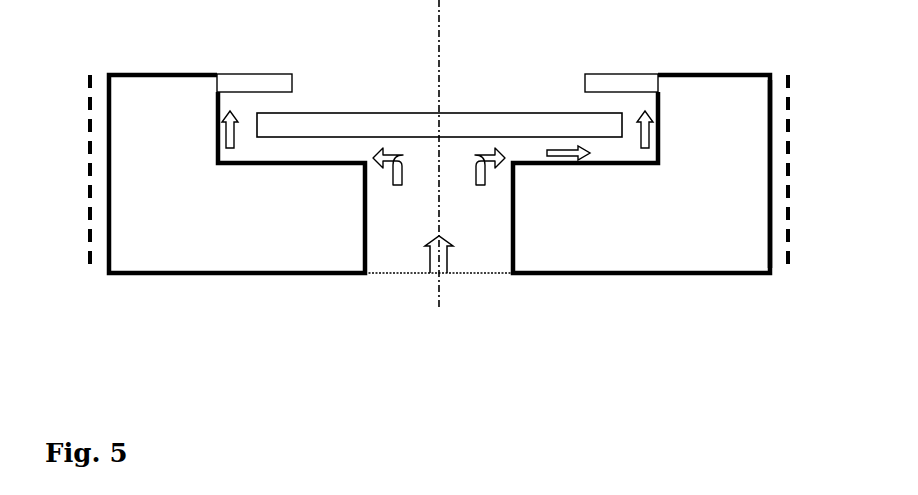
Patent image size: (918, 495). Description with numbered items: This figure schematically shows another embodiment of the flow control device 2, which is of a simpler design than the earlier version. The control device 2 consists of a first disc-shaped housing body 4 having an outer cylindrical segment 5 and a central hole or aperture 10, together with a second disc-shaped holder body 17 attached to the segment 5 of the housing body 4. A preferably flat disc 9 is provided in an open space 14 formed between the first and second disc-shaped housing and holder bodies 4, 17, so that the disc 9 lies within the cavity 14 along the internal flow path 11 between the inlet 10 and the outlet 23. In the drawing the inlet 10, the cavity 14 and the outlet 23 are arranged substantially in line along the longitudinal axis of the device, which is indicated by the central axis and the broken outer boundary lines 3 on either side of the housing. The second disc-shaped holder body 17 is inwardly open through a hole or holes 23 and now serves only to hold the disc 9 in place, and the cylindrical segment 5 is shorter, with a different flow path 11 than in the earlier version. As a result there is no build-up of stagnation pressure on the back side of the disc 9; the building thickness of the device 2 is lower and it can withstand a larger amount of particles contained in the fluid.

The control device 2 is at (200, 289).
The outer boundary 3 is at (788, 85).
The first disc-shaped housing body 4 is at (590, 212).
The outer cylindrical segment 5 is at (752, 145).
The disc 9 is at (420, 130).
The central hole or aperture 10 is at (402, 202).
The internal flow path 11 is at (435, 277).
The open space 14 is at (250, 125).
The second disc-shaped holder body 17 is at (255, 75).
The hole 23 is at (505, 82).